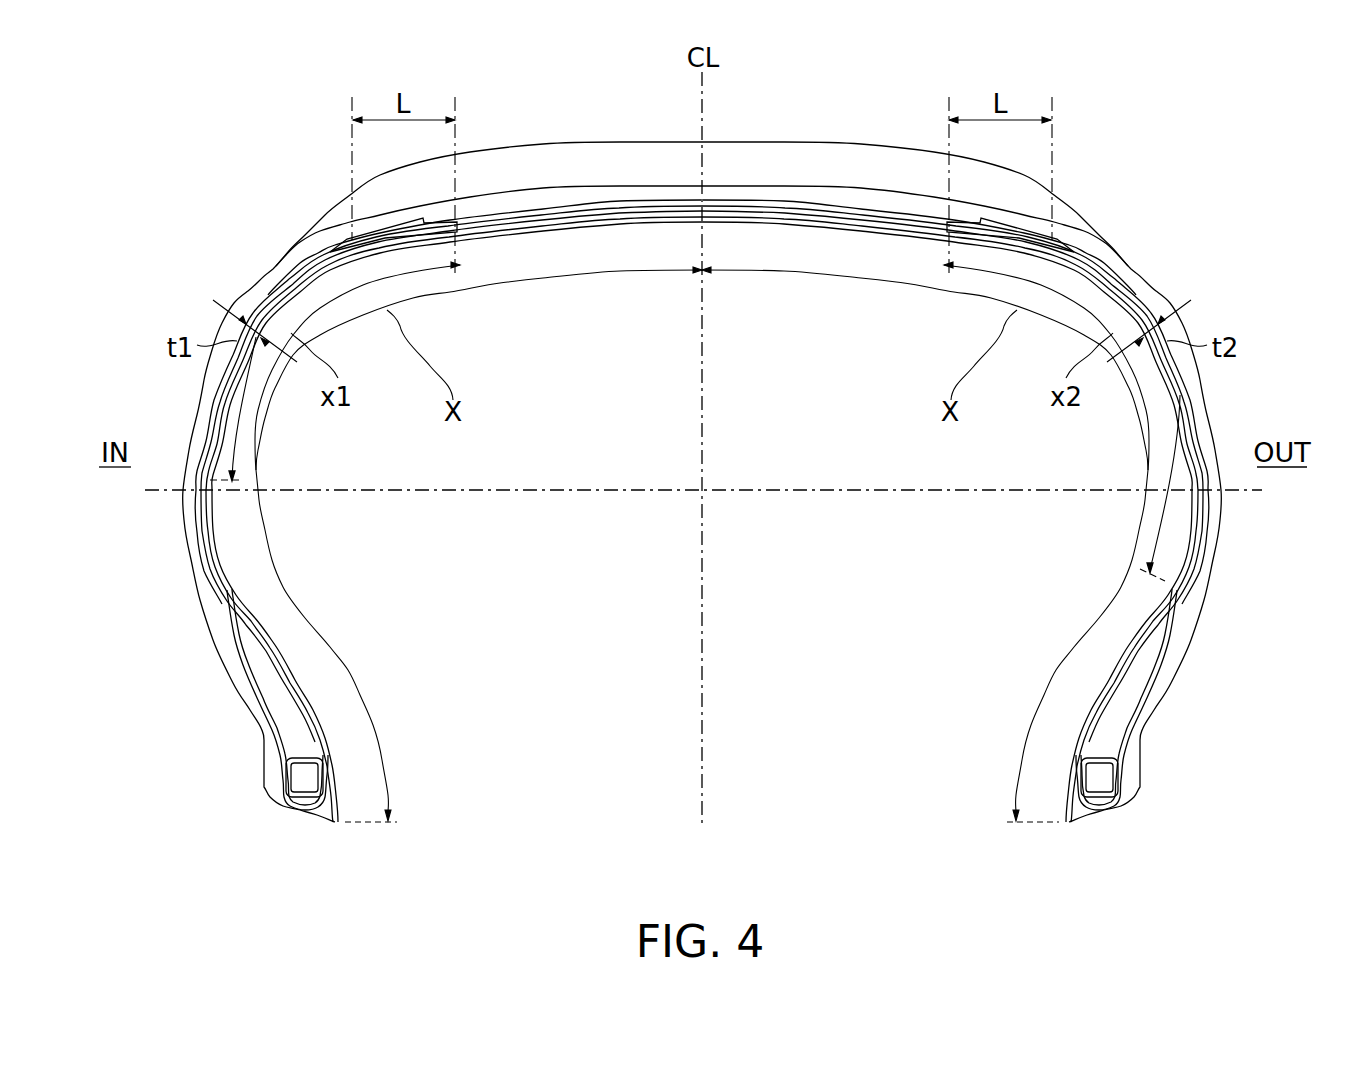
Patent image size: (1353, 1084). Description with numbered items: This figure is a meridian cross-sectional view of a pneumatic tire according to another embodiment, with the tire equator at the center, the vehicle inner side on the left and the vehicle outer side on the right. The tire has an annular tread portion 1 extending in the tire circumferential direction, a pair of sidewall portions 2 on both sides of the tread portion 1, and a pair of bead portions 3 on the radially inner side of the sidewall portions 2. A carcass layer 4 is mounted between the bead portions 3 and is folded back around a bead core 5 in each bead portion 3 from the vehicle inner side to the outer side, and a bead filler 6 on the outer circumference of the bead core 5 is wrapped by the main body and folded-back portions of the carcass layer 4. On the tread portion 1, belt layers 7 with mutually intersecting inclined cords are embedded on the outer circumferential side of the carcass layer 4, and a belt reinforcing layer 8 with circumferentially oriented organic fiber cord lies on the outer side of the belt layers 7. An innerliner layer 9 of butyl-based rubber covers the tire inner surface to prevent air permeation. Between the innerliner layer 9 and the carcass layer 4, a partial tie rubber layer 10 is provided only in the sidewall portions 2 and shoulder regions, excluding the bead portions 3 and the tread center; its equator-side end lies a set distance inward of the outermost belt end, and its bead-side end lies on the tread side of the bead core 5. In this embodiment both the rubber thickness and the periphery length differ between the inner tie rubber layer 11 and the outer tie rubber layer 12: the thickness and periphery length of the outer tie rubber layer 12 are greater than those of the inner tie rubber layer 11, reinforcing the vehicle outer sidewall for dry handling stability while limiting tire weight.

The tread portion 1 is at (736, 133).
The sidewall portions 2 is at (1257, 541).
The bead portions 3 is at (1168, 770).
The carcass layer 4 is at (735, 222).
The bead core 5 is at (1101, 781).
The bead filler 6 is at (1121, 693).
The belt layers 7 is at (810, 214).
The belt reinforcing layer 8 is at (1021, 220).
The innerliner layer 9 is at (866, 233).
The partial tie rubber layer 10 is at (695, 459).
The inner tie rubber layer 11 is at (223, 400).
The outer tie rubber layer 12 is at (1181, 400).